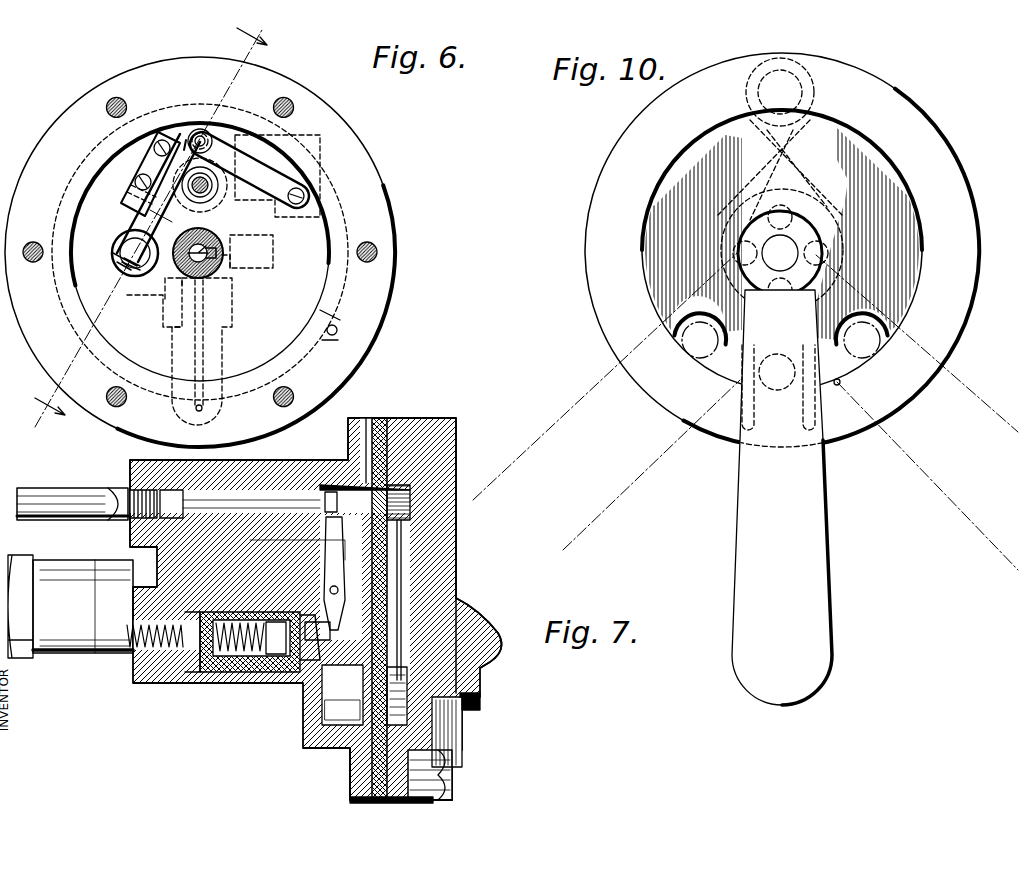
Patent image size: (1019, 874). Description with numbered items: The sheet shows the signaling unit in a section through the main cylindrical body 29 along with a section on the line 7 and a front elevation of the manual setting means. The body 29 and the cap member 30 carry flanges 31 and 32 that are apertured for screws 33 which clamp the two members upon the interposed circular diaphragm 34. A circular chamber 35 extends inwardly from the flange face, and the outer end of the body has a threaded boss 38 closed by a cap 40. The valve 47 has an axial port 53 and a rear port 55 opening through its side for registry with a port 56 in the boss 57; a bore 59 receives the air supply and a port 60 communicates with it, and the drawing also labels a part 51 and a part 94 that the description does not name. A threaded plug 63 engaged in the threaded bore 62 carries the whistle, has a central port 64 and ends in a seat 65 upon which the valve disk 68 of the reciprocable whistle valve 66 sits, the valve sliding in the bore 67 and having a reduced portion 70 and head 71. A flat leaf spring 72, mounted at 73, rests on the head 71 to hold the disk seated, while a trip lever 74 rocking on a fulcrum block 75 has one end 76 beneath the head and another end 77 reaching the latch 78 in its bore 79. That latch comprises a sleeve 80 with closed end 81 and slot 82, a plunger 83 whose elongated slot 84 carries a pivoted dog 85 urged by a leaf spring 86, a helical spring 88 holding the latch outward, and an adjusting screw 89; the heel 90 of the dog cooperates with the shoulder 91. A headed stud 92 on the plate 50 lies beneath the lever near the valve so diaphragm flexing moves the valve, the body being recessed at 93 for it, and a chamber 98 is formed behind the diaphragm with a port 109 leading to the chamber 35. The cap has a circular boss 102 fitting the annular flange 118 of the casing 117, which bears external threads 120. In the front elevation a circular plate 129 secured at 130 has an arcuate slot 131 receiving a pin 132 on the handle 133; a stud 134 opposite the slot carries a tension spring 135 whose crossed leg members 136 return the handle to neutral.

In FIG. 6, the section line 7— 7 is at (151, 221).
In FIG. 7, the main cylindrical body 29 is at (305, 718).
In FIG. 7, the cap member 30 is at (436, 418).
In FIG. 6, the flange 31 is at (45, 360).
In FIG. 7, the flange 31 is at (355, 775).
In FIG. 7, the flange 32 is at (455, 775).
In FIG. 6, the screws 33 is at (286, 100).
In FIG. 7, the screws 33 is at (455, 797).
In FIG. 7, the circular diaphragm 34 is at (392, 420).
In FIG. 6, the circular chamber 35 is at (330, 290).
In FIG. 7, the circular chamber 35 is at (318, 712).
In FIG. 7, the boss 38 is at (80, 560).
In FIG. 7, the cap 40 is at (22, 560).
In FIG. 6, the valve 47 is at (195, 240).
In FIG. 7, the plate 50 is at (355, 705).
In FIG. 7, the stem 51 is at (457, 662).
In FIG. 6, the axial port 53 is at (215, 272).
In FIG. 6, the port 55 is at (222, 262).
In FIG. 6, the port 56 is at (218, 248).
In FIG. 6, the boss 57 is at (212, 248).
In FIG. 6, the bore 59 is at (168, 320).
In FIG. 6, the port 60 is at (113, 238).
In FIG. 7, the threaded bore 62 is at (130, 476).
In FIG. 7, the threaded plug 63 is at (132, 462).
In FIG. 7, the central port 64 is at (250, 490).
In FIG. 7, the seat 65 is at (270, 490).
In FIG. 7, the whistle valve 66 is at (292, 490).
In FIG. 7, the bore 67 is at (326, 515).
In FIG. 7, the valve disk 68 is at (142, 520).
In FIG. 7, the reduced portion 70 is at (330, 500).
In FIG. 6, the head 71 is at (205, 135).
In FIG. 7, the head 71 is at (362, 470).
In FIG. 6, the flat leaf spring 72 is at (250, 160).
In FIG. 7, the flat leaf spring 72 is at (378, 420).
In FIG. 6, the spring mounting 73 is at (305, 190).
In FIG. 6, the trip lever 74 is at (118, 150).
In FIG. 7, the trip lever 74 is at (385, 570).
In FIG. 6, the fulcrum block 75 is at (136, 182).
In FIG. 7, the fulcrum block 75 is at (420, 470).
In FIG. 6, the lever end 76 is at (186, 140).
In FIG. 7, the lever end 76 is at (430, 440).
In FIG. 6, the lever end 77 is at (128, 245).
In FIG. 7, the lever end 77 is at (400, 612).
In FIG. 6, the latch 78 is at (148, 285).
In FIG. 7, the latch 78 is at (200, 665).
In FIG. 7, the bore 79 is at (200, 650).
In FIG. 7, the cylindrical sleeve 80 is at (225, 655).
In FIG. 7, the closed end 81 is at (150, 648).
In FIG. 7, the slot 82 is at (305, 640).
In FIG. 7, the cylindrical plunger 83 is at (268, 650).
In FIG. 6, the elongated slot 84 is at (118, 262).
In FIG. 7, the elongated slot 84 is at (366, 600).
In FIG. 6, the dog 85 is at (130, 268).
In FIG. 7, the dog 85 is at (325, 655).
In FIG. 6, the flat leaf spring 86 is at (133, 268).
In FIG. 7, the flat leaf spring 86 is at (318, 660).
In FIG. 7, the helical spring 88 is at (160, 683).
In FIG. 7, the screw 89 is at (112, 655).
In FIG. 7, the heel 90 is at (300, 660).
In FIG. 7, the shoulder 91 is at (290, 645).
In FIG. 6, the headed stud 92 is at (203, 195).
In FIG. 7, the headed stud 92 is at (405, 510).
In FIG. 6, the recess 93 is at (233, 160).
In FIG. 7, the recess 93 is at (250, 540).
In FIG. 6, the slide block 94 is at (274, 252).
In FIG. 7, the chamber 98 is at (463, 725).
In FIG. 7, the circular boss 102 is at (478, 680).
In FIG. 6, the port 109 is at (345, 330).
In FIG. 10, the casing 117 is at (801, 203).
In FIG. 7, the annular flange 118 is at (482, 700).
In FIG. 7, the external screw threads 120 is at (490, 660).
In FIG. 10, the circular plate 129 is at (963, 222).
In FIG. 10, the plate securement 130 is at (820, 230).
In FIG. 10, the arcuate slot 131 is at (840, 386).
In FIG. 10, the pin 132 is at (712, 438).
In FIG. 10, the handle 133 is at (590, 518).
In FIG. 10, the stud 134 is at (790, 88).
In FIG. 10, the tension spring 135 is at (828, 88).
In FIG. 10, the leg members 136 is at (756, 210).